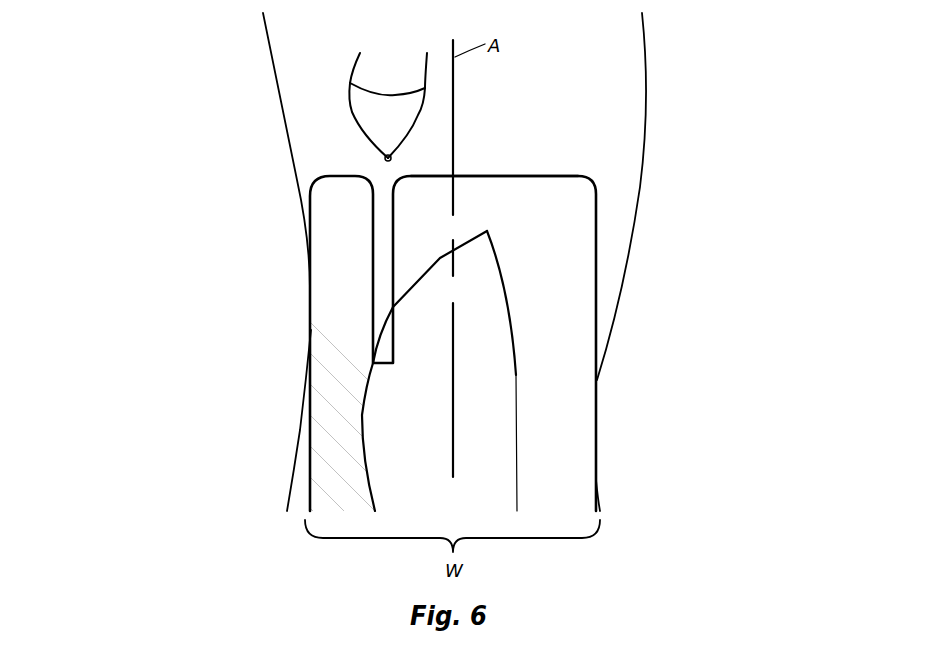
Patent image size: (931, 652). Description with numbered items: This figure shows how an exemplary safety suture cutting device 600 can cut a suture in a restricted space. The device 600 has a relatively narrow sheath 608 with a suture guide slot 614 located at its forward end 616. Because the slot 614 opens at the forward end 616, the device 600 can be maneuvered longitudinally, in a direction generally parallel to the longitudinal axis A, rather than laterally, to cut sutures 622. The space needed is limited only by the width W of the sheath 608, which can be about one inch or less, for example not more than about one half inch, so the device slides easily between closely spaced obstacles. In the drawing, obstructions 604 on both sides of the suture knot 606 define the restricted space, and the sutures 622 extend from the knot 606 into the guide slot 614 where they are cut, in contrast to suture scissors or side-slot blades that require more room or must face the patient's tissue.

The device 600 is at (545, 117).
The obstructions 604 is at (174, 280).
The suture knot 606 is at (384, 160).
The sheath 608 is at (518, 197).
The suture guide slot 614 is at (386, 284).
The forward end 616 is at (475, 177).
The sutures 622 is at (358, 78).